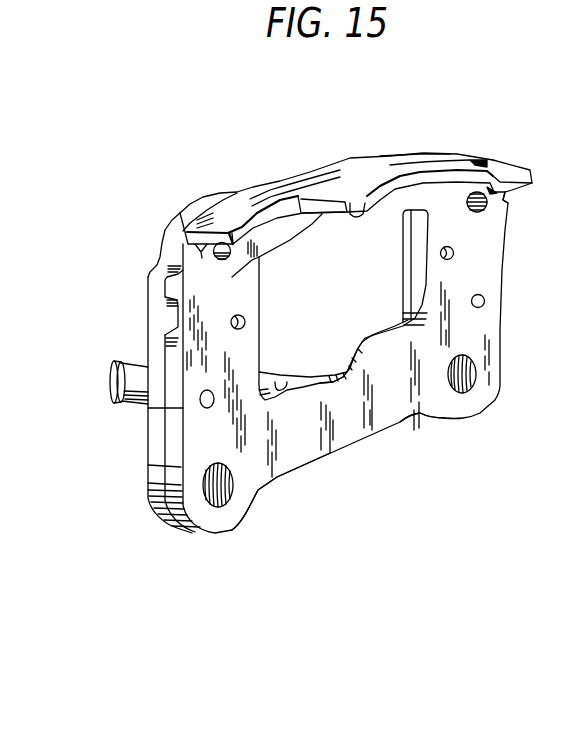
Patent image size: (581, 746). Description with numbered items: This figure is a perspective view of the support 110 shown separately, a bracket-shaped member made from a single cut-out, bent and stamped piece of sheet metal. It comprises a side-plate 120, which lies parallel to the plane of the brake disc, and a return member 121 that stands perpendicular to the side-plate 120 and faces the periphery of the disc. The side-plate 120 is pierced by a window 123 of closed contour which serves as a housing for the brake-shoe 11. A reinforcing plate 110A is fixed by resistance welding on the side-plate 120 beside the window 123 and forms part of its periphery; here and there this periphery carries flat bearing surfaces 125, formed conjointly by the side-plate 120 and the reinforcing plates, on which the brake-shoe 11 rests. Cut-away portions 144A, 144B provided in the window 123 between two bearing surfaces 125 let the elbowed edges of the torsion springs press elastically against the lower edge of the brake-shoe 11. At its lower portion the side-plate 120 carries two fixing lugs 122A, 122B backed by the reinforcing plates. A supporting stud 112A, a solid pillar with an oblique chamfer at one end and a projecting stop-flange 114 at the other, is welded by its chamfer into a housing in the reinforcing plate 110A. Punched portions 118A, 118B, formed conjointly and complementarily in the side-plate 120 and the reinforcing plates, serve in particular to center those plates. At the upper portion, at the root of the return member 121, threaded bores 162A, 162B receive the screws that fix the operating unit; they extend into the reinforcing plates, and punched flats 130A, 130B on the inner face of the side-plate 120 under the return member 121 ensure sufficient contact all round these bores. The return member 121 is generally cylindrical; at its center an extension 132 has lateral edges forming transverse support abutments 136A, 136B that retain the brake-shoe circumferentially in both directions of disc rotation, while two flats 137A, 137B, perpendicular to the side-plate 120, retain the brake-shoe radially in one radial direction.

The brake-shoe 11 is at (574, 298).
The support 110 is at (257, 185).
The reinforcing plate 110A is at (205, 199).
The supporting stud 112A is at (125, 378).
The stop-flange 114 is at (115, 400).
The punched portion 118A is at (232, 320).
The punched portion 118B is at (453, 253).
The side-plate 120 is at (338, 440).
The return member 121 is at (420, 150).
The fixing lug 122A is at (209, 513).
The fixing lug 122B is at (473, 398).
The window 123 is at (342, 368).
The flat bearing surface 125 is at (438, 278).
The punched flat 130A is at (190, 228).
The punched flat 130B is at (505, 200).
The extension 132 is at (355, 200).
The transverse support abutment 136A is at (321, 214).
The transverse support abutment 136B is at (490, 183).
The flat 137A is at (360, 194).
The flat 137B is at (499, 188).
The cut-away portion 144A is at (291, 390).
The cut-away portion 144B is at (417, 340).
The threaded bore 162A is at (260, 293).
The threaded bore 162B is at (468, 205).